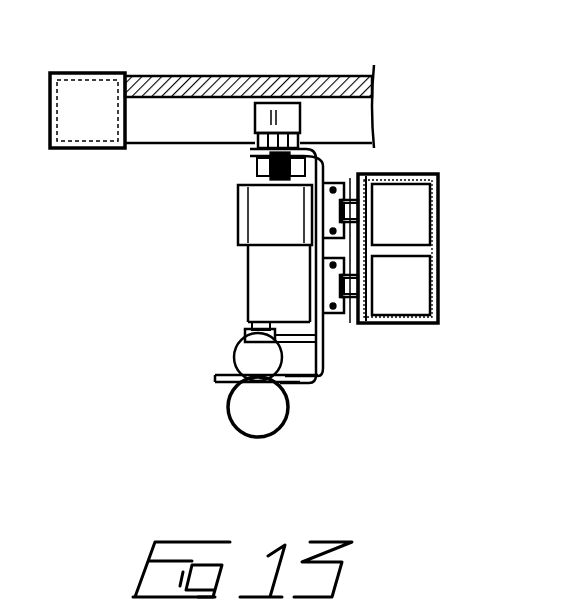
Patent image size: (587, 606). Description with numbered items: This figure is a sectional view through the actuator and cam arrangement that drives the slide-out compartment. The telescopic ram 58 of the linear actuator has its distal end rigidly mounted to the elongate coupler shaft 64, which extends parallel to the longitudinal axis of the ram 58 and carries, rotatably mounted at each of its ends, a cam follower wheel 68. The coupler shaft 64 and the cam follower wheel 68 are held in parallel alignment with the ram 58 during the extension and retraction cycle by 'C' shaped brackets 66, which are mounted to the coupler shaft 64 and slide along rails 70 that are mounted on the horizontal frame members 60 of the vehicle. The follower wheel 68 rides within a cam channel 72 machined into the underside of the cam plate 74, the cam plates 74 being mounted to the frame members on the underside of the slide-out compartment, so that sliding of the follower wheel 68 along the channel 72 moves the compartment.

The telescopic ram 58 is at (252, 397).
The horizontal frame members 60 is at (430, 215).
The coupler shaft 64 is at (272, 213).
The 'C' shaped brackets 66 is at (350, 185).
The cam follower wheel 68 is at (272, 118).
The rails 70 is at (352, 212).
The cam recesses or channels 72 is at (338, 108).
The cam plates 74 is at (187, 75).